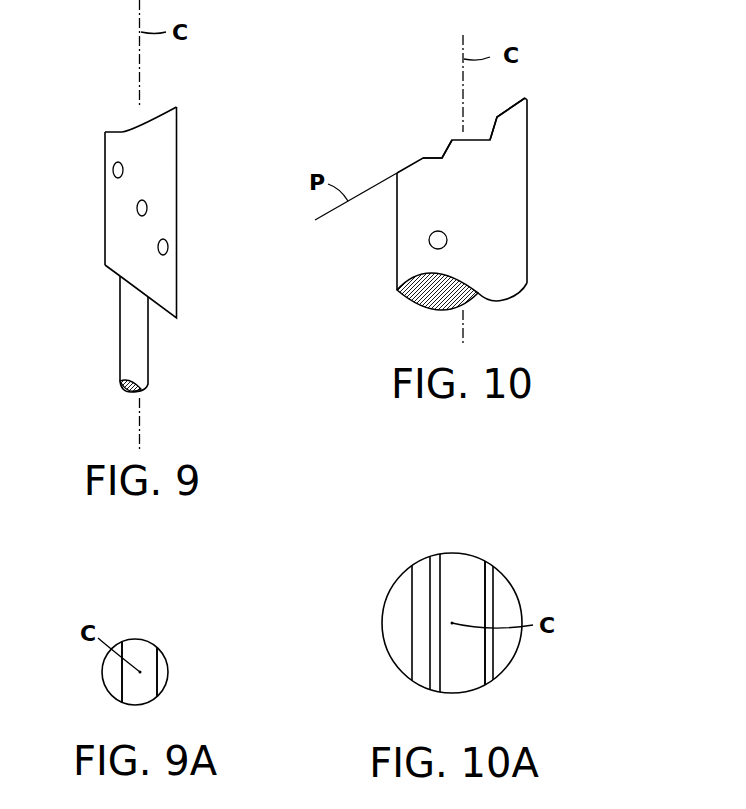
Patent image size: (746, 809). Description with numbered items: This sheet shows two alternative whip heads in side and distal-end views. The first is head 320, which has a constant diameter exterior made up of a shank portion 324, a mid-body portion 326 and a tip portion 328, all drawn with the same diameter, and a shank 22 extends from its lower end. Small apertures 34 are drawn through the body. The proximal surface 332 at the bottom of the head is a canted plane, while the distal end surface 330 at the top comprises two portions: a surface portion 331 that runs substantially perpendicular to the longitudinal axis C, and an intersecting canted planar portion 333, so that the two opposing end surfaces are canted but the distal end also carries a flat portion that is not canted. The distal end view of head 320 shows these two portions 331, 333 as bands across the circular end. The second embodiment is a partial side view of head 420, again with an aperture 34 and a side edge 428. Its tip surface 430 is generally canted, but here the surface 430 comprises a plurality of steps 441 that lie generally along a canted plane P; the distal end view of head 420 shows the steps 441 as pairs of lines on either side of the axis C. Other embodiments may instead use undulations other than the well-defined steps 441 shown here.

In FIG. 9, the shank 22 is at (141, 366).
In FIG. 9, the aperture 34 is at (112, 172).
In FIG. 10, the aperture 34 is at (428, 240).
In FIG. 9, the head 320 is at (126, 226).
In FIG. 9A, the head 320 is at (132, 665).
In FIG. 9, the shank portion 324 is at (165, 283).
In FIG. 9, the mid-body portion 326 is at (155, 198).
In FIG. 9, the tip portion 328 is at (160, 140).
In FIG. 9, the distal end surface 330 is at (150, 111).
In FIG. 9A, the distal end surface 330 is at (140, 687).
In FIG. 9, the surface portion 331 is at (117, 131).
In FIG. 9A, the surface portion 331 is at (112, 672).
In FIG. 9, the proximal surface 332 is at (112, 275).
In FIG. 9, the canted planar portion 333 is at (178, 104).
In FIG. 9A, the canted planar portion 333 is at (162, 670).
In FIG. 10, the head 420 is at (489, 193).
In FIG. 10A, the head 420 is at (456, 611).
In FIG. 10, the side edge of blade 428 is at (515, 173).
In FIG. 10, the tip surface 430 is at (451, 136).
In FIG. 10A, the tip surface 430 is at (464, 677).
In FIG. 10, the steps 441 is at (447, 150).
In FIG. 10A, the steps 441 is at (435, 587).